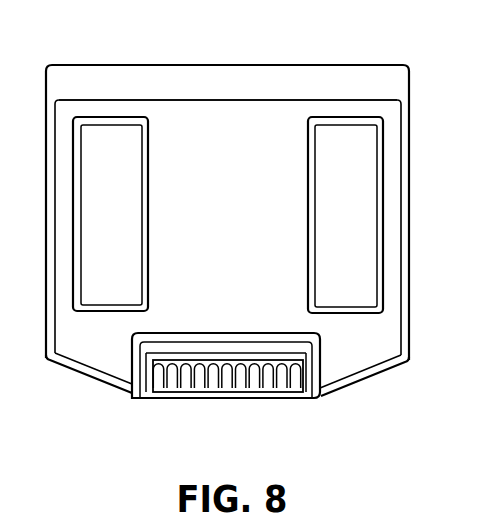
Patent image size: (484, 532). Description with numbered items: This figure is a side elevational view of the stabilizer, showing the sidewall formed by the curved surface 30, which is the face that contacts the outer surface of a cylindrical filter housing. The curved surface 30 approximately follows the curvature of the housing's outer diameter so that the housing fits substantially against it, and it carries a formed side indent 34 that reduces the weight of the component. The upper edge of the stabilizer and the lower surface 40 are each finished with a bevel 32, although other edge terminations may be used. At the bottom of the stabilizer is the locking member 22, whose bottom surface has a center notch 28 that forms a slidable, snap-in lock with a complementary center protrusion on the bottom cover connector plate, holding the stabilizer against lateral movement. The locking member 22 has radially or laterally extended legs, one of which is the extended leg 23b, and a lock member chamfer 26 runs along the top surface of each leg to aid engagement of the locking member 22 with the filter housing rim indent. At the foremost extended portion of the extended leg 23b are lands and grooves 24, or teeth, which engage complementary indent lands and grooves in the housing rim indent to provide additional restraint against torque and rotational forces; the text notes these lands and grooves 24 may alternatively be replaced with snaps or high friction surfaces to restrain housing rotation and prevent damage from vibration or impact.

The locking member 22 is at (143, 371).
The extended leg 23b is at (312, 352).
The lands and grooves 24 is at (253, 385).
The lock member chamfer 26 is at (225, 348).
The center notch 28 is at (148, 65).
The curved surface 30 is at (247, 182).
The bevel 32 is at (288, 85).
The side indent 34 is at (347, 198).
The lower surface 40 is at (73, 375).